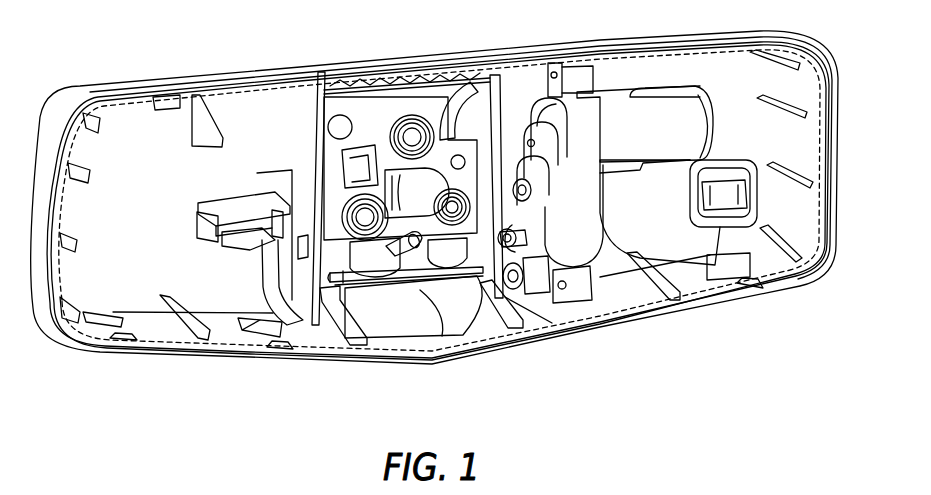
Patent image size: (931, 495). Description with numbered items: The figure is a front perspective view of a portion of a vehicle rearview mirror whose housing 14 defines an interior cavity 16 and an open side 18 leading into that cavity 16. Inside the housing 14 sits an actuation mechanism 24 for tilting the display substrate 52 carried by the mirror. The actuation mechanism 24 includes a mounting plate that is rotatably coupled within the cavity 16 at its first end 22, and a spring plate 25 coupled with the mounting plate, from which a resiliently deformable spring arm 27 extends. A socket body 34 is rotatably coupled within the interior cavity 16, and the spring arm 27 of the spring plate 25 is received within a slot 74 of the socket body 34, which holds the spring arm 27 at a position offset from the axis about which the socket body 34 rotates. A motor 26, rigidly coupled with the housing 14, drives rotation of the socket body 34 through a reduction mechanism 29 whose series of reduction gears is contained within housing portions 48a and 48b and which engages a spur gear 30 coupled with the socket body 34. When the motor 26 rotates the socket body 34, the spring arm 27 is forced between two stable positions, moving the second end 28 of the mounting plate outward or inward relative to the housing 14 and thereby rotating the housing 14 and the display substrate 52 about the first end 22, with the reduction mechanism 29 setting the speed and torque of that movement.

The housing 14 is at (70, 111).
The interior cavity 16 is at (814, 220).
The open side 18 is at (183, 356).
The first end 22 is at (360, 90).
The actuation mechanism 24 is at (657, 221).
The spring plate 25 is at (440, 153).
The motor 26 is at (680, 118).
The spring arm 27 is at (372, 266).
The second end 28 is at (480, 278).
The reduction mechanism 29 is at (566, 252).
The spur gear 30 is at (527, 282).
The socket body 34 is at (390, 298).
The housing portion 48a is at (583, 133).
The housing portion 48b is at (594, 238).
The display substrate 52 is at (833, 121).
The slot 74 is at (418, 283).